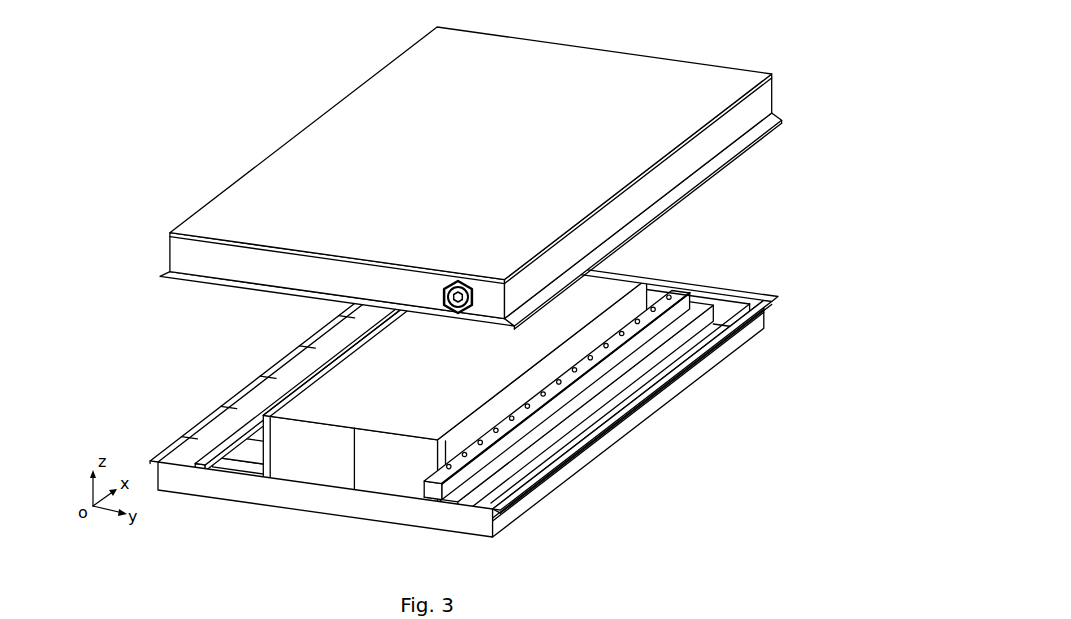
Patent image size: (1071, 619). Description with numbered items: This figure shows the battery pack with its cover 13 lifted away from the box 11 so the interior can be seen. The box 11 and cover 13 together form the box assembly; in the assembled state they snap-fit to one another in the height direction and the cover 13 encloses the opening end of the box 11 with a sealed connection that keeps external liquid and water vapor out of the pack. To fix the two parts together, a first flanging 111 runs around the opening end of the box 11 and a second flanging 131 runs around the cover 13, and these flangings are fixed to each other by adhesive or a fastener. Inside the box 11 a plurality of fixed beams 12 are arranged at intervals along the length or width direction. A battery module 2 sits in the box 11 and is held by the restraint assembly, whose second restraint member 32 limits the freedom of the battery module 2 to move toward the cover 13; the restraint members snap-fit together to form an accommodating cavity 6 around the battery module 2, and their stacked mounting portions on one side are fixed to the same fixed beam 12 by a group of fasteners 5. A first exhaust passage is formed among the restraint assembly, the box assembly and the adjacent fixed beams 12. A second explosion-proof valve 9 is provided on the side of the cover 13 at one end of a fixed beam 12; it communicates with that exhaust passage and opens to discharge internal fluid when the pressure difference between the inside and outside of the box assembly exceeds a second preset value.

The battery module 2 is at (393, 486).
The fasteners 5 is at (668, 292).
The accommodating cavity 6 is at (263, 477).
The second explosion-proof valve 9 is at (465, 285).
The box 11 is at (464, 392).
The first flanging 111 is at (550, 477).
The fixed beams 12 is at (447, 408).
The cover 13 is at (472, 168).
The second flanging 131 is at (722, 158).
The second restraint member 32 is at (310, 372).